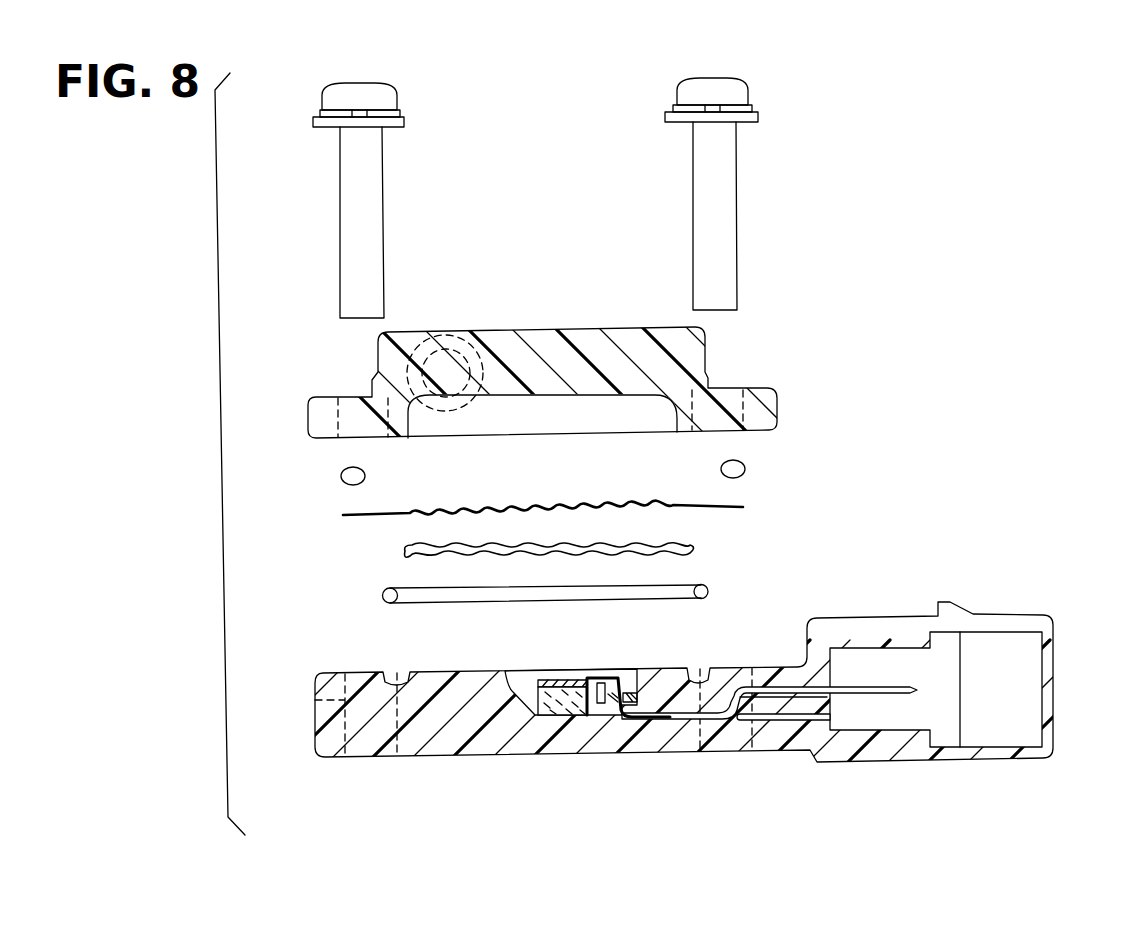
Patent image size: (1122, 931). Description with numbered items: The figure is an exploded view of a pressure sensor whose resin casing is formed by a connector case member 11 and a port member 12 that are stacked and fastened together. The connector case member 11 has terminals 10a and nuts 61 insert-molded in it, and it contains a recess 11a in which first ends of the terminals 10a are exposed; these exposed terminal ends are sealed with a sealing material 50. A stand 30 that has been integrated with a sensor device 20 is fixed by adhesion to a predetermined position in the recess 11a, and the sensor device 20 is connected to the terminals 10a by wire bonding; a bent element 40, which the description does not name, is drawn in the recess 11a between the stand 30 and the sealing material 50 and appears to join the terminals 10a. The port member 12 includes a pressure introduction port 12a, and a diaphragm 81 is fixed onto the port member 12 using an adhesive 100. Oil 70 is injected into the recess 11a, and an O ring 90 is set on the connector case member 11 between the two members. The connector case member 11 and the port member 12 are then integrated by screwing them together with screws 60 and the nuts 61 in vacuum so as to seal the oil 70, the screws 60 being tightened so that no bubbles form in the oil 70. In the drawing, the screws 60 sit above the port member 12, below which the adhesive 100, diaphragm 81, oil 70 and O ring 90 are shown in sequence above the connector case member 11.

The screws 60 is at (352, 172).
The port member 12 is at (695, 353).
The pressure introduction port 12a is at (480, 343).
The adhesive 100 is at (745, 466).
The diaphragm 81 is at (693, 510).
The oil 70 is at (400, 549).
The O ring 90 is at (383, 594).
The connector case member 11 is at (646, 702).
The recess 11a is at (513, 680).
The nuts 61 is at (314, 706).
The terminals 10a is at (917, 689).
The sensor device 20 is at (548, 679).
The stand 30 is at (573, 696).
The terminal fitting 40 is at (605, 677).
The sealing material 50 is at (630, 693).